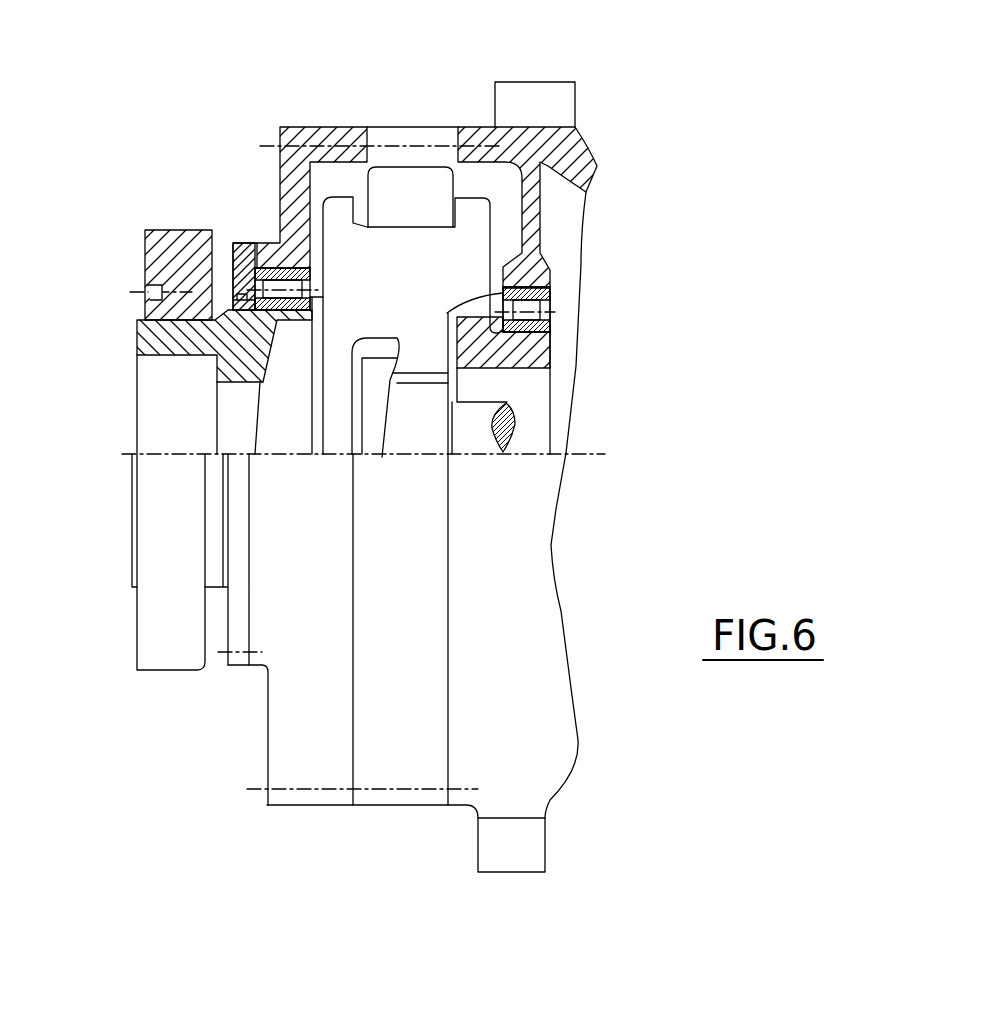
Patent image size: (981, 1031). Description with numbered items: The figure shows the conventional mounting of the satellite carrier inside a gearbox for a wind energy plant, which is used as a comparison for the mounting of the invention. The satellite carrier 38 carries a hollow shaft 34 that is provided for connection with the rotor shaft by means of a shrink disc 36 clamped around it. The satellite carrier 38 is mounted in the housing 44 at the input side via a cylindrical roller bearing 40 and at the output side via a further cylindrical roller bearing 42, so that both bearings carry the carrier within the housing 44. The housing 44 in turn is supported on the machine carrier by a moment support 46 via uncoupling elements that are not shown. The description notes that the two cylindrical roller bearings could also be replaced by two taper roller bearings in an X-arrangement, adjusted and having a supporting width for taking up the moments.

The hollow shaft 34 is at (150, 333).
The shrink disc 36 is at (168, 248).
The satellite carrier 38 is at (348, 250).
The cylindrical roller bearing 40 is at (278, 265).
The further cylindrical roller bearing 42 is at (553, 292).
The housing 44 is at (563, 142).
The moment support 46 is at (567, 92).